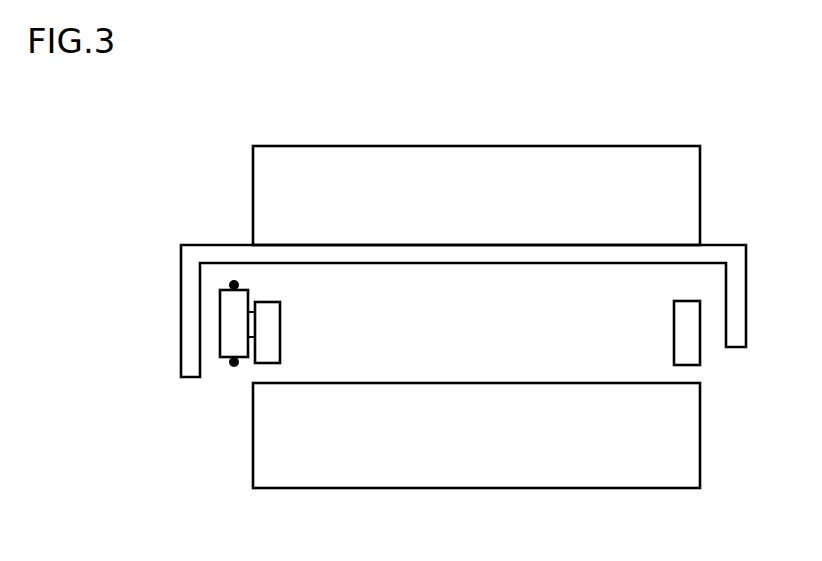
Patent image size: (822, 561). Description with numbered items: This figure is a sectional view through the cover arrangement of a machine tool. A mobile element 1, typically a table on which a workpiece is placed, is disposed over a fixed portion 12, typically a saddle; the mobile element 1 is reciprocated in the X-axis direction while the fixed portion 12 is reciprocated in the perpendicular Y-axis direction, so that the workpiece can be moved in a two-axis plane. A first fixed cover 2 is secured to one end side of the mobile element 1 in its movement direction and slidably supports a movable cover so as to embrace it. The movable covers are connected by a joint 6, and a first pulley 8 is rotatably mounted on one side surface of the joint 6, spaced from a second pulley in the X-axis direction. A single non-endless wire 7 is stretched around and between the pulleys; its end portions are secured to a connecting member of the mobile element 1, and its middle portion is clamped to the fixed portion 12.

The mobile element 1 is at (478, 145).
The first fixed cover 2 is at (726, 244).
The joint 6 is at (254, 366).
The wire 7 is at (233, 280).
The first pulley 8 is at (219, 312).
The fixed portion 12 is at (481, 490).